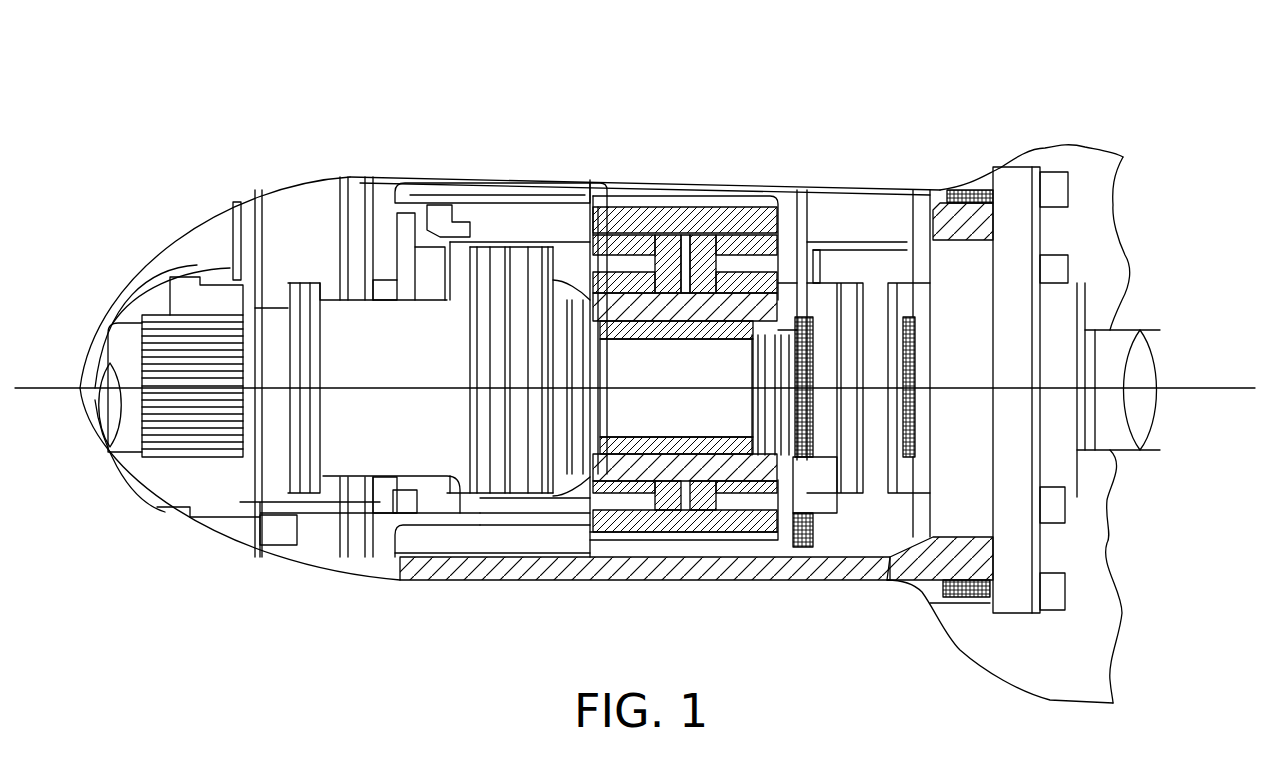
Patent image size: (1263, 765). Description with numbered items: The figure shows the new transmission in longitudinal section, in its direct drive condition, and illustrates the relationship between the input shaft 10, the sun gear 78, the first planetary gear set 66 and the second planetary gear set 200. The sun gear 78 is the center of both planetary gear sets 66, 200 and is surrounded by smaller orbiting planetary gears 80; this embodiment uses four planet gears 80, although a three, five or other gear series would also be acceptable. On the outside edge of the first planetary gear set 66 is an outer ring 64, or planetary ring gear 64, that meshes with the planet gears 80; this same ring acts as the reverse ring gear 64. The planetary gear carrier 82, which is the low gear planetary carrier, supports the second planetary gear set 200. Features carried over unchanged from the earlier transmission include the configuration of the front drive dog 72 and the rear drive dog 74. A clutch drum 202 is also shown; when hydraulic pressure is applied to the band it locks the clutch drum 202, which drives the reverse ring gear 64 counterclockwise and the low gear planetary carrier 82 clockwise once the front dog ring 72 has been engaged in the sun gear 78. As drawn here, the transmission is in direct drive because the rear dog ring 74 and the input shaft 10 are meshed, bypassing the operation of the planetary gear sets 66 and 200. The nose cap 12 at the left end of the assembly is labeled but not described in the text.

The input shaft 10 is at (1110, 453).
The nose cap 12 is at (127, 447).
The planetary ring gear 64 is at (695, 186).
The first planetary gear set 66 is at (765, 500).
The front drive dog 72 is at (897, 365).
The rear drive dog 74 is at (370, 443).
The sun gear 78 is at (730, 445).
The planetary gears 80 is at (668, 238).
The planetary gear carrier 82 is at (670, 228).
The second planetary gear set 200 is at (690, 500).
The clutch drum 202 is at (812, 237).